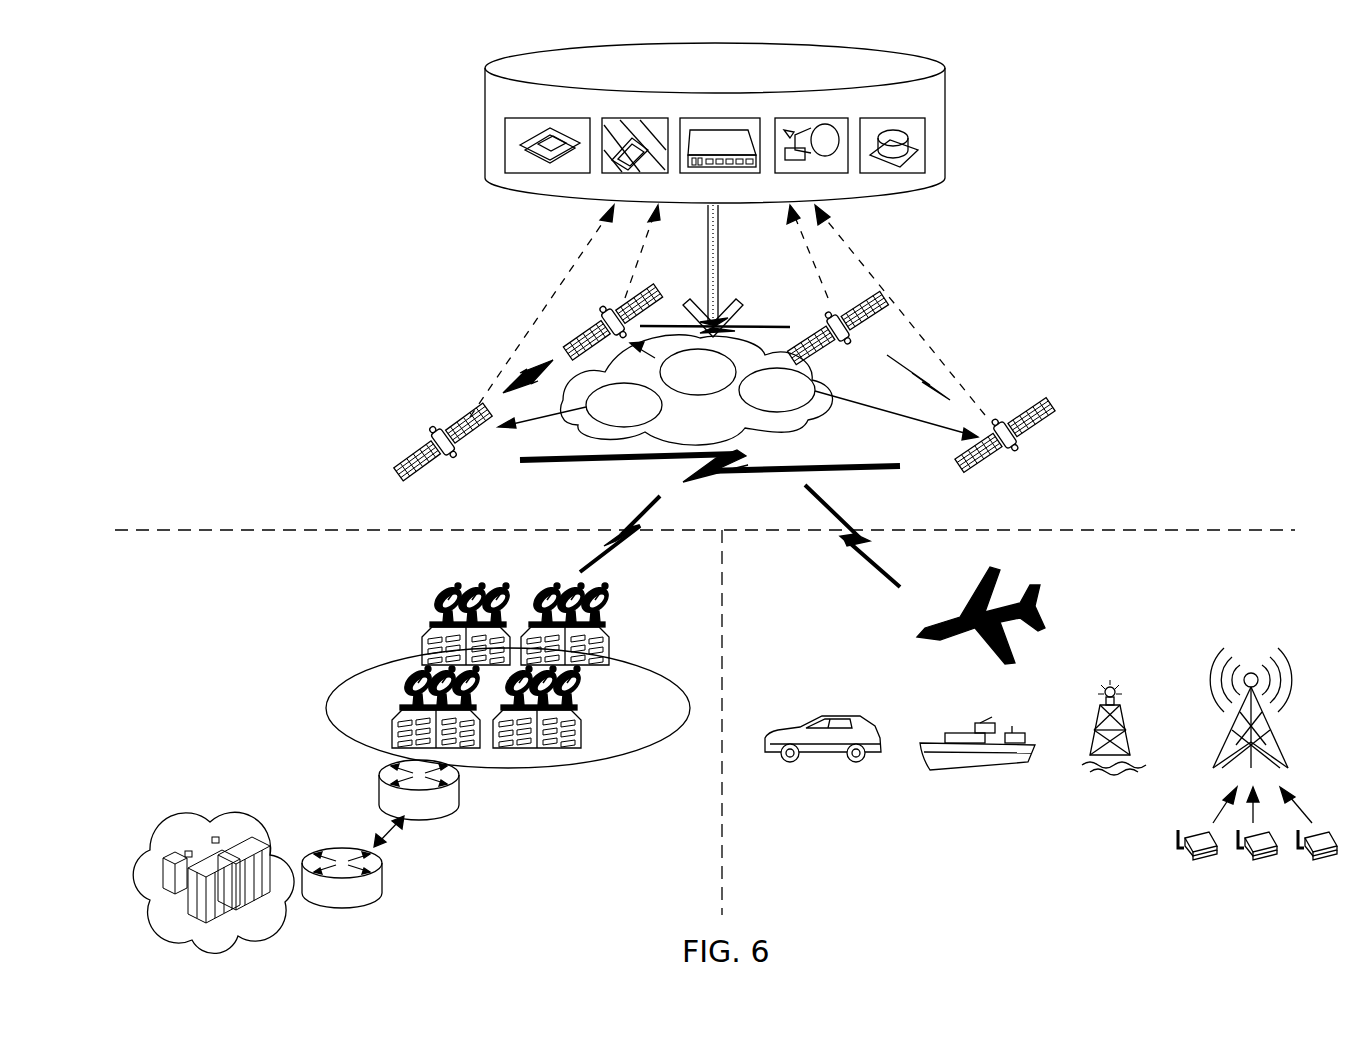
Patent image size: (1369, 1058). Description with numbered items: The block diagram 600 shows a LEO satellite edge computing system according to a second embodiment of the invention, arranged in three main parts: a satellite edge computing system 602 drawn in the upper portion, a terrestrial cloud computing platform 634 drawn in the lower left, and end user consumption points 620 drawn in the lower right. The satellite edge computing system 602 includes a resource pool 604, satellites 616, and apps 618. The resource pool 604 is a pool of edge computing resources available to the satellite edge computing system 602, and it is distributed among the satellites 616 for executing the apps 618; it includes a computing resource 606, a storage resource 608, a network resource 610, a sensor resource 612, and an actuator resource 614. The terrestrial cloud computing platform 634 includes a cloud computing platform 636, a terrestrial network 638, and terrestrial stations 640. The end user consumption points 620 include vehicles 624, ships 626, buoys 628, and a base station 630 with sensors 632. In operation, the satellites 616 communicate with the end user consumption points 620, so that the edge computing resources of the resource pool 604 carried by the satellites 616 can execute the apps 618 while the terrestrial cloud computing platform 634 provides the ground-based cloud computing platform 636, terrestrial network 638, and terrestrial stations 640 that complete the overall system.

The block diagram 600 is at (1200, 95).
The satellite edge computing system 602 is at (222, 426).
The resource pool 604 is at (486, 60).
The computing resource 606 is at (505, 135).
The storage resource 608 is at (612, 173).
The network resource 610 is at (740, 173).
The sensor resource 612 is at (828, 173).
The actuator resource 614 is at (925, 140).
The satellites 616 is at (576, 342).
The apps 618 is at (588, 386).
The end user consumption points 620 is at (852, 615).
The vehicles 624 is at (828, 778).
The ships 626 is at (970, 778).
The buoys 628 is at (1108, 778).
The base station 630 is at (1277, 735).
The sensors 632 is at (1318, 870).
The terrestrial cloud computing platform 634 is at (220, 609).
The cloud computing platform 636 is at (195, 808).
The terrestrial network 638 is at (385, 868).
The terrestrial stations 640 is at (570, 766).